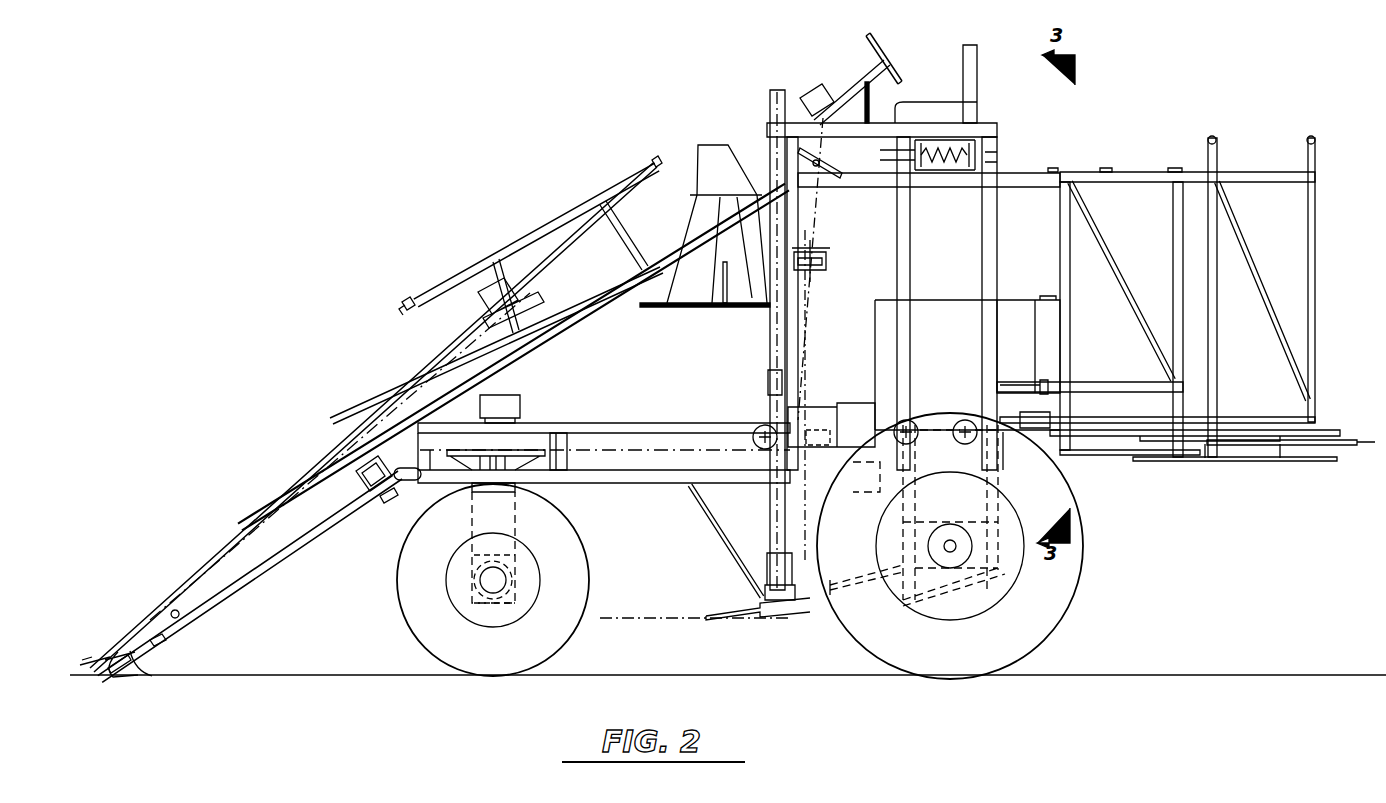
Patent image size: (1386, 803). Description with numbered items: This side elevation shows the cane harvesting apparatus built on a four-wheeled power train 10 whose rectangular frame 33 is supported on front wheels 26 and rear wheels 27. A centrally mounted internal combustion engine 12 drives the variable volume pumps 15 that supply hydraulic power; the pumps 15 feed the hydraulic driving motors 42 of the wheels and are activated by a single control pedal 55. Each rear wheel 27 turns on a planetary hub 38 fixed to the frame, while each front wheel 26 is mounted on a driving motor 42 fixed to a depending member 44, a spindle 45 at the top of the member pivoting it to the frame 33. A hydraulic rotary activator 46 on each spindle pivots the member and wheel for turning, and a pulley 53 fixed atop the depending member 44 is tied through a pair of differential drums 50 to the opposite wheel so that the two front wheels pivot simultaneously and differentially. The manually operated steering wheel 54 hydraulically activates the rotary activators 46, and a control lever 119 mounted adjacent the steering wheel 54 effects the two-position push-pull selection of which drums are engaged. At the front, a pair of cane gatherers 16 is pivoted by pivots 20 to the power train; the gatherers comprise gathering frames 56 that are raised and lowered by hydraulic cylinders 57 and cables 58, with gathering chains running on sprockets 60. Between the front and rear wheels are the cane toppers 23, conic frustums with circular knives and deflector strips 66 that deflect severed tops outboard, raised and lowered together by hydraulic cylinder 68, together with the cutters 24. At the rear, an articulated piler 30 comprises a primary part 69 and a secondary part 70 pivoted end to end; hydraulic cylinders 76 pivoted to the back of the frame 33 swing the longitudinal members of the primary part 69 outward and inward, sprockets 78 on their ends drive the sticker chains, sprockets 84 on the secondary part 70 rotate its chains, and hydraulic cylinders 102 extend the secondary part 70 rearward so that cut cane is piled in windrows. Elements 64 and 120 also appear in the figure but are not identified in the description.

The power train 10 is at (724, 150).
The internal combustion engine 12 is at (1000, 300).
The variable volume pumps 15 is at (865, 400).
The cane gatherers 16 is at (328, 535).
The pivots 20 is at (405, 482).
The cane toppers 23 is at (690, 180).
The cutters 24 is at (749, 612).
The front wheels 26 is at (562, 615).
The rear wheels 27 is at (992, 662).
The articulated piler 30 is at (1115, 170).
The rectangular frame 33 is at (657, 487).
The planetary hubs 38 is at (972, 548).
The hydraulic driving motors 42 is at (510, 583).
The depending member 44 is at (512, 525).
The spindle 45 is at (497, 430).
The hydraulic rotary activators 46 is at (517, 392).
The differential drums 50 is at (962, 142).
The pulleys 53 is at (567, 437).
The steering wheel 54 is at (859, 70).
The control pedal 55 is at (809, 160).
The gathering frames 56 is at (175, 620).
The hydraulic cylinders 57 is at (378, 468).
The cables 58 is at (297, 512).
The sprockets 60 is at (382, 505).
The base plate 64 is at (638, 303).
The deflector strips 66 is at (760, 283).
The hydraulic cylinder 68 is at (768, 368).
The primary part 69 is at (1152, 172).
The secondary part 70 is at (1249, 172).
The hydraulic cylinders 76 is at (1032, 383).
The sprockets 78 is at (1217, 418).
The sprockets 84 is at (1225, 458).
The hydraulic cylinders 102 is at (1082, 418).
The control lever 119 is at (867, 98).
The bracket 120 is at (825, 262).